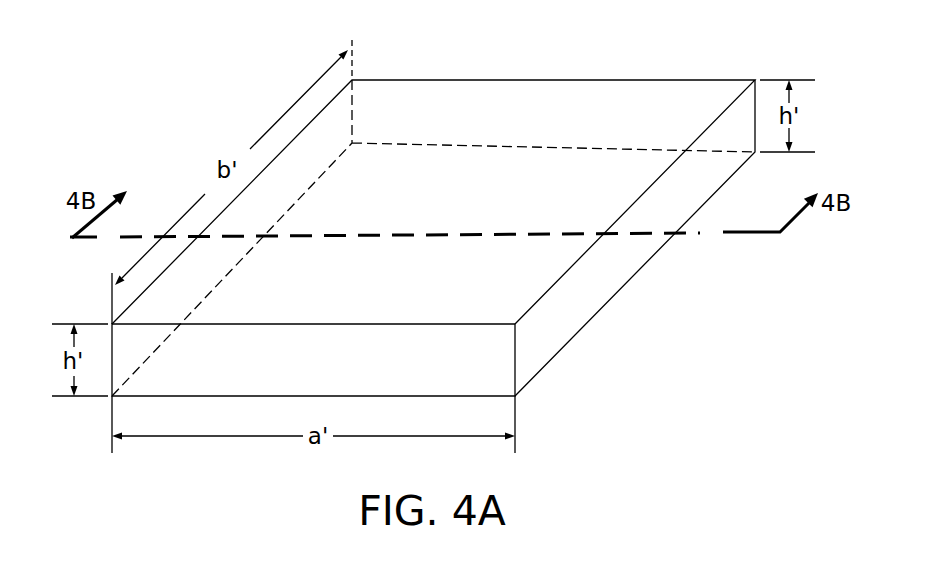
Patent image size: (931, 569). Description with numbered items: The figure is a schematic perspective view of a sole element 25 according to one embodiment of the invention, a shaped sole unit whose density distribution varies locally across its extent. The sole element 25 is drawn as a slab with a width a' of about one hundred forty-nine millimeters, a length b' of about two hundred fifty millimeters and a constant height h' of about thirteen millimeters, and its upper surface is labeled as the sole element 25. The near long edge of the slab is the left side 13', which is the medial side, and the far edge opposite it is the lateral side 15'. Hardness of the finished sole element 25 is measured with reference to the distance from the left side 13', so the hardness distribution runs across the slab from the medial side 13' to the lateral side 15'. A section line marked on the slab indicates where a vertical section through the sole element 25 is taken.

The left side 13' is at (384, 238).
The lateral side 15' is at (635, 238).
The sole element 25 is at (526, 80).